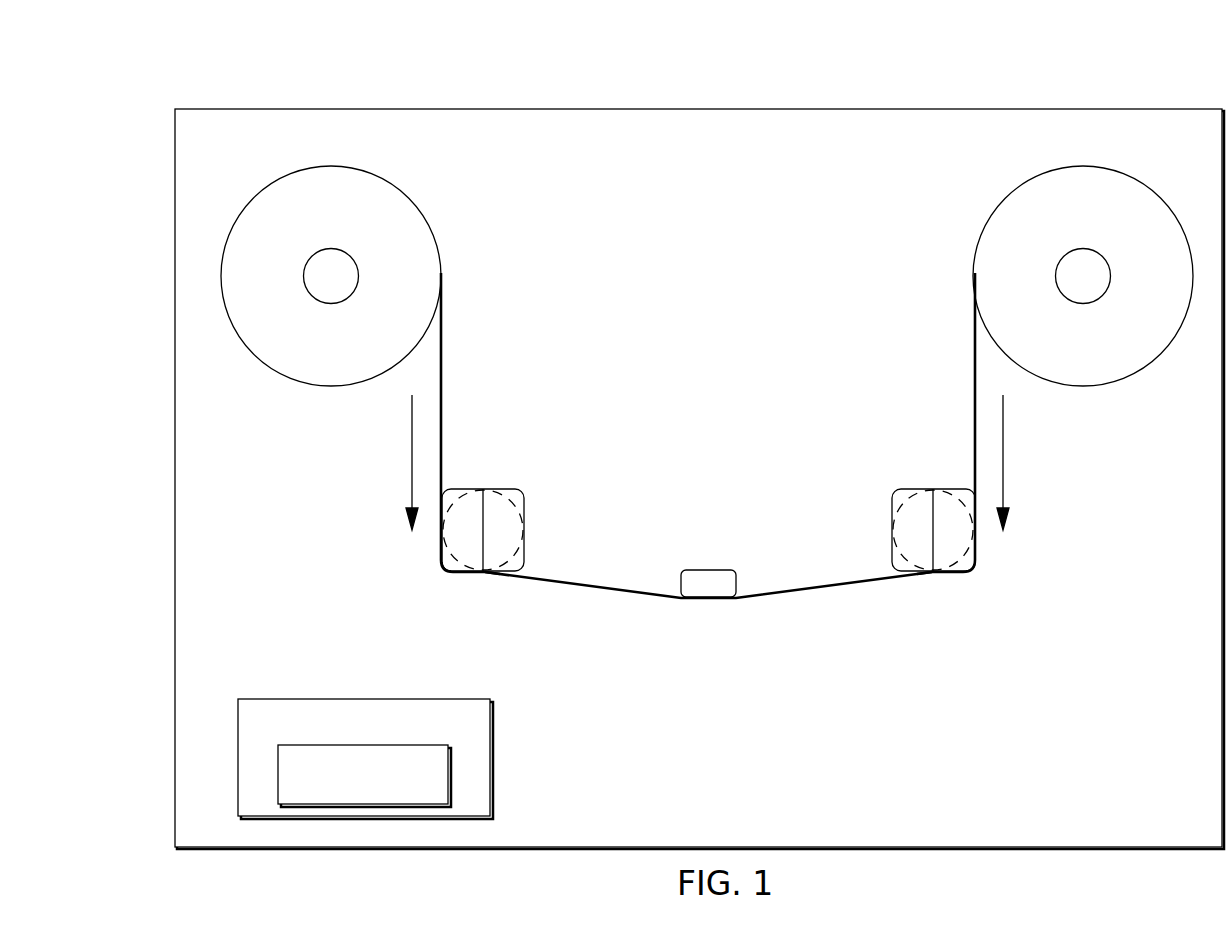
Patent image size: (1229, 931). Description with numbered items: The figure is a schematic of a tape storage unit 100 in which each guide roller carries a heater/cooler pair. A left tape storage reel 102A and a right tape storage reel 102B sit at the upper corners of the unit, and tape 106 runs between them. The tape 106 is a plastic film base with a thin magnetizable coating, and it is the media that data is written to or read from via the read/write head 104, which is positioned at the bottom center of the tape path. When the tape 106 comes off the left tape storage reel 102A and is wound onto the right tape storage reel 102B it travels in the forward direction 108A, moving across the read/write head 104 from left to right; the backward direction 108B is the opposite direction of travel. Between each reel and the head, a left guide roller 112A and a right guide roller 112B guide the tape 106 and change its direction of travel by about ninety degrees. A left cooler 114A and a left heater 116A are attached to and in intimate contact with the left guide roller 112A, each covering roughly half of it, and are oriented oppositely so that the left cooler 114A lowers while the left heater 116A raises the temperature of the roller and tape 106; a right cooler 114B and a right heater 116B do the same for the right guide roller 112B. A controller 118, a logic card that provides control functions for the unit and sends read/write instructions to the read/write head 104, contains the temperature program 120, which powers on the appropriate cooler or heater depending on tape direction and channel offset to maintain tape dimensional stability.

The tape storage unit 100 is at (212, 55).
The left tape storage reel 102A is at (420, 207).
The right tape storage reel 102B is at (1000, 200).
The read/write head 104 is at (707, 570).
The tape 106 is at (443, 345).
The forward direction 108A is at (408, 474).
The backward direction 108B is at (1005, 472).
The left guide roller 112A is at (515, 505).
The right guide roller 112B is at (903, 505).
The left cooler 114A is at (444, 572).
The right cooler 114B is at (973, 572).
The left heater 116A is at (523, 574).
The right heater 116B is at (893, 574).
The controller 118 is at (365, 699).
The temperature program 120 is at (451, 775).